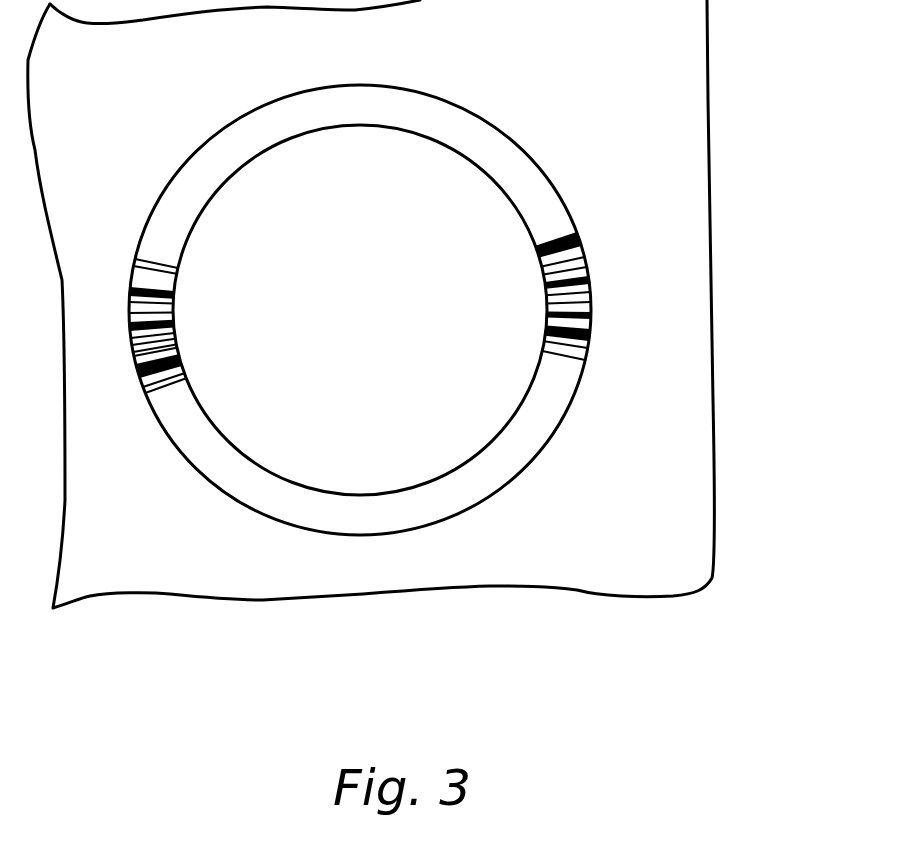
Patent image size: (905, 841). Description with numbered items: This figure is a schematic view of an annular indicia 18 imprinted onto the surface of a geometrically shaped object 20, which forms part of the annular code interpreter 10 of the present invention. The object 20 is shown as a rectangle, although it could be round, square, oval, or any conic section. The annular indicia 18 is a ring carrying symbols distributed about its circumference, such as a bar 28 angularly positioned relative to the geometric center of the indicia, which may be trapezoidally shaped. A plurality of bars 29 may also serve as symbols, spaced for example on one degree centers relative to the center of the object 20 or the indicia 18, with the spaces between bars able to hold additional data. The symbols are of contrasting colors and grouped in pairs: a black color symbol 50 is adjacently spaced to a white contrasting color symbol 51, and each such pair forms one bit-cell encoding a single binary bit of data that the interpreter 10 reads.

The annular code interpreter 10 is at (612, 317).
The annular indicia 18 is at (497, 130).
The geometrically shaped object 20 is at (712, 250).
The bar 28 is at (578, 236).
The plurality of bars 29 is at (527, 242).
The color symbol 50 is at (180, 366).
The contrasting color symbol 51 is at (182, 353).